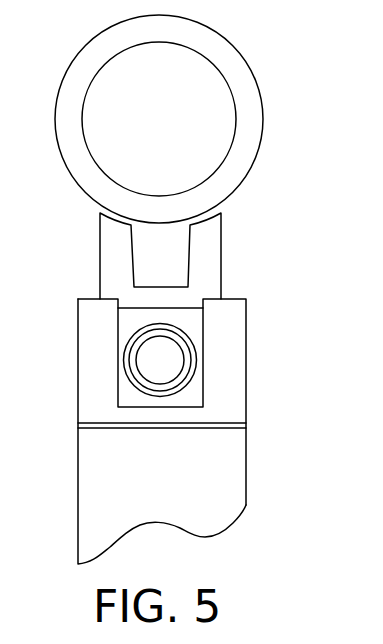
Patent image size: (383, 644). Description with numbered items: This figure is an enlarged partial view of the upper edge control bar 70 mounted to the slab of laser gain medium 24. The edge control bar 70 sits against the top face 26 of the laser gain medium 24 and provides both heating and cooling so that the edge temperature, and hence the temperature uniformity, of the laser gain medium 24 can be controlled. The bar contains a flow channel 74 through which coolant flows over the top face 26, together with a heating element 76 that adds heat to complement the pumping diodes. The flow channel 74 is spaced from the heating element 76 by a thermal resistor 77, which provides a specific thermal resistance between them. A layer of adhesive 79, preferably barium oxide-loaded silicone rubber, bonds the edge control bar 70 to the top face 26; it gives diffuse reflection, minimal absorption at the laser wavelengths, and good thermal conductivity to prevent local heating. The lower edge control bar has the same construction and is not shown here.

The laser gain medium 24 is at (246, 468).
The top face 26 is at (108, 430).
The upper edge control bar 70 is at (263, 120).
The flow channel 74 is at (222, 78).
The heating element 76 is at (196, 343).
The thermal resistor 77 is at (221, 250).
The adhesive 79 is at (246, 422).